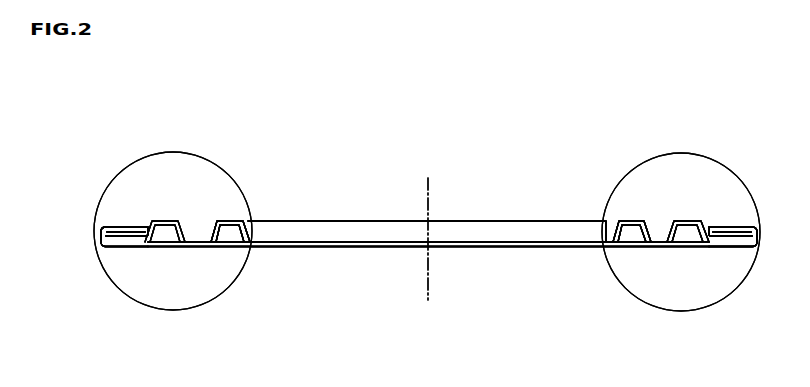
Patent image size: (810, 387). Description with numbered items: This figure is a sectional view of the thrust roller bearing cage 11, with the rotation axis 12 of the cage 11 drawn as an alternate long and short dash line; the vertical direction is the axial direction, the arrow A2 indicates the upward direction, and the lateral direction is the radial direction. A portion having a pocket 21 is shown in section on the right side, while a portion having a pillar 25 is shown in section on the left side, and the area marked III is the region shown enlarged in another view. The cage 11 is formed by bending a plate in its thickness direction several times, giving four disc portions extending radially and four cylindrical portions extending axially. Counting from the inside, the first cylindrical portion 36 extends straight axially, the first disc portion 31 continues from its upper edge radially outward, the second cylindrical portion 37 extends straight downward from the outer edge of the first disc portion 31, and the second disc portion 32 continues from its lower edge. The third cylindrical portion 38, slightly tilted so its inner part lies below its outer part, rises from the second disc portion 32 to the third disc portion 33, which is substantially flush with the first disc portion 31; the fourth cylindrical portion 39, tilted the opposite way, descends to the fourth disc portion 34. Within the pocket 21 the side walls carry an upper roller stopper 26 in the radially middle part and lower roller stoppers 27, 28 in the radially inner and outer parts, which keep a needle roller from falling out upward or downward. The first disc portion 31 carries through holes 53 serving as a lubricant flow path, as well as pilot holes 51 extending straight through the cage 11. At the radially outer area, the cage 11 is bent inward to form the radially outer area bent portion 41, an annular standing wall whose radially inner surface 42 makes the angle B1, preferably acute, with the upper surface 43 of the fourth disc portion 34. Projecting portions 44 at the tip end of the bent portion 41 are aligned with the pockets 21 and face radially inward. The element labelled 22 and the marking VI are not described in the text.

The thrust roller bearing cage 11 is at (727, 99).
The rotation axis 12 is at (428, 288).
The pocket 21 is at (688, 251).
The top plate 22 is at (342, 229).
The pillar 25 is at (184, 210).
The upper roller stopper 26 is at (690, 221).
The lower roller stopper 27 is at (654, 249).
The lower roller stopper 28 is at (717, 250).
The first disc portion 31 is at (226, 221).
The second disc portion 32 is at (199, 249).
The third disc portion 33 is at (169, 221).
The fourth disc portion 34 is at (123, 249).
The first cylindrical portion 36 is at (250, 236).
The second cylindrical portion 37 is at (223, 238).
The third cylindrical portion 38 is at (191, 224).
The fourth cylindrical portion 39 is at (140, 228).
The radially outer area bent portion 41 is at (104, 230).
The radially inner surface 42 is at (131, 228).
The upper surface 43 is at (155, 248).
The projecting portion 44 is at (730, 228).
The pilot hole 51 is at (251, 222).
The through hole 53 is at (606, 221).
The section VI is at (113, 181).
The area III is at (745, 187).
The arrow A2 is at (68, 217).
The angle B1 is at (131, 248).